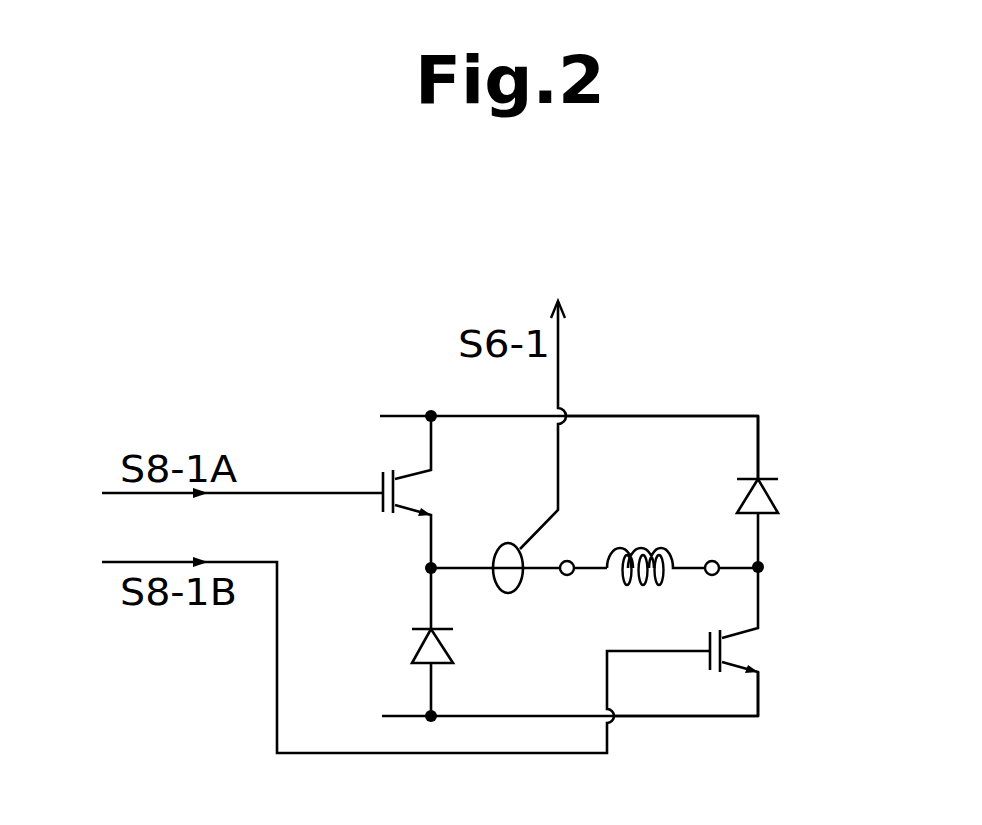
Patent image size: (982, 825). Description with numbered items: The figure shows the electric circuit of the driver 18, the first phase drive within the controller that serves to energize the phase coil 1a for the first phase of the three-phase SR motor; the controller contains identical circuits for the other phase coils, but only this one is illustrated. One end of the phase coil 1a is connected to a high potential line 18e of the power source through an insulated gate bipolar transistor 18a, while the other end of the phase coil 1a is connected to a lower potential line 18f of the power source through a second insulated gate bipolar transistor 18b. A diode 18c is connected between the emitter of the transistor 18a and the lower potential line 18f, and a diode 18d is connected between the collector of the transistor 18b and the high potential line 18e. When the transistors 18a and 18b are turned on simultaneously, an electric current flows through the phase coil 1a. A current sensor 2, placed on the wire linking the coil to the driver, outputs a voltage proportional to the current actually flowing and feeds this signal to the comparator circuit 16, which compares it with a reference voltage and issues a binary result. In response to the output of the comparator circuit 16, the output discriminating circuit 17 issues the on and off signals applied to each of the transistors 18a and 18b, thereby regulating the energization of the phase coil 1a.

The comparator circuit 16 is at (582, 287).
The output discriminating circuit 17 is at (84, 546).
The driver 18 is at (355, 398).
The insulated gate bipolar transistor 18a is at (410, 512).
The insulated gate bipolar transistor 18b is at (735, 662).
The diode 18c is at (413, 647).
The diode 18d is at (773, 491).
The high potential line 18e is at (691, 416).
The lower potential line 18f is at (672, 717).
The phase coil 1a is at (636, 547).
The current sensor 2 is at (516, 586).